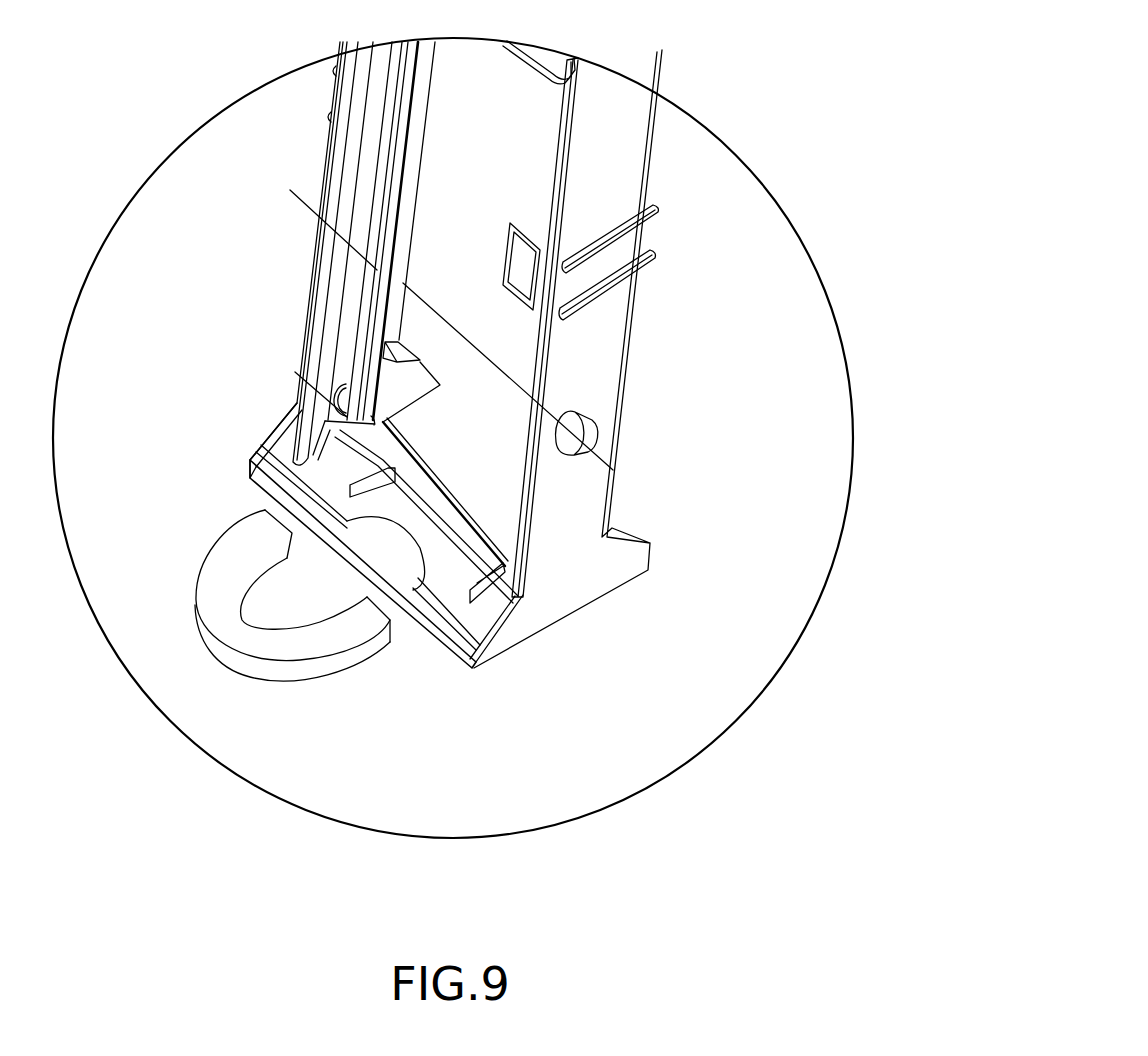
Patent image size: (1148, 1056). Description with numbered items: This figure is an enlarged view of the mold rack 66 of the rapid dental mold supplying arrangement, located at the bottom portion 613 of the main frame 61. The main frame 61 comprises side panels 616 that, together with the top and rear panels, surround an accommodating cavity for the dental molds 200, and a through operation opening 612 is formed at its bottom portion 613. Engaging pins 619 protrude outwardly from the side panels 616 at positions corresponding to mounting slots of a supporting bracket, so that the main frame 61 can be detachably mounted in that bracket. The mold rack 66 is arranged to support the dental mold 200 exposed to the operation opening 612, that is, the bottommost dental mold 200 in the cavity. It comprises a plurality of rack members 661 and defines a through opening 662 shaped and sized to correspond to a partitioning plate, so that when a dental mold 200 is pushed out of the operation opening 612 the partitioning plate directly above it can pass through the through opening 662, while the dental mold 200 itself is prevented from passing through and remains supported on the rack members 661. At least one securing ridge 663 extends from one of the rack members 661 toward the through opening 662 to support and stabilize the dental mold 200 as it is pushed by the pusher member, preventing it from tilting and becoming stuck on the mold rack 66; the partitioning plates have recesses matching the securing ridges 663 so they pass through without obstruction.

The main frame 61 is at (607, 370).
The operation opening 612 is at (445, 445).
The bottom portion 613 is at (620, 480).
The side panels 616 is at (625, 153).
The engaging pins 619 is at (560, 425).
The mold rack 66 is at (235, 495).
The rack members 661 is at (473, 520).
The through opening 662 is at (427, 533).
The securing ridges 663 is at (513, 597).
The dental mold 200 is at (313, 662).